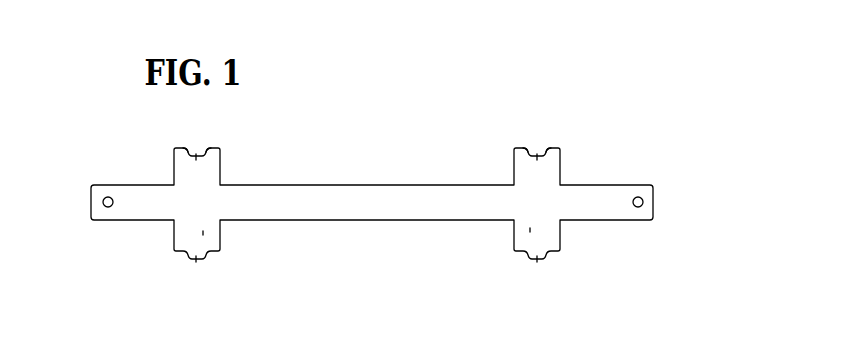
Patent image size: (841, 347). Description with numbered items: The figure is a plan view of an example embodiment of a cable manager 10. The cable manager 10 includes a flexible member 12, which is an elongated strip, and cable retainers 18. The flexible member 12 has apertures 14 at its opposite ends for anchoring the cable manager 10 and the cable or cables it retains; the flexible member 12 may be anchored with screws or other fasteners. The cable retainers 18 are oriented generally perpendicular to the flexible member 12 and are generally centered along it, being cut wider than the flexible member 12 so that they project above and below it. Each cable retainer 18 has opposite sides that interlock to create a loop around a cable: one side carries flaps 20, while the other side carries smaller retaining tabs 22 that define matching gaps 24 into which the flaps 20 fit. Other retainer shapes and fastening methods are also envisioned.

The cable manager 10 is at (607, 93).
The flexible member 12 is at (139, 220).
The apertures 14 is at (108, 196).
The cable retainers 18 is at (530, 229).
The flaps 20 is at (196, 260).
The retaining tabs 22 is at (552, 148).
The gaps 24 is at (196, 157).